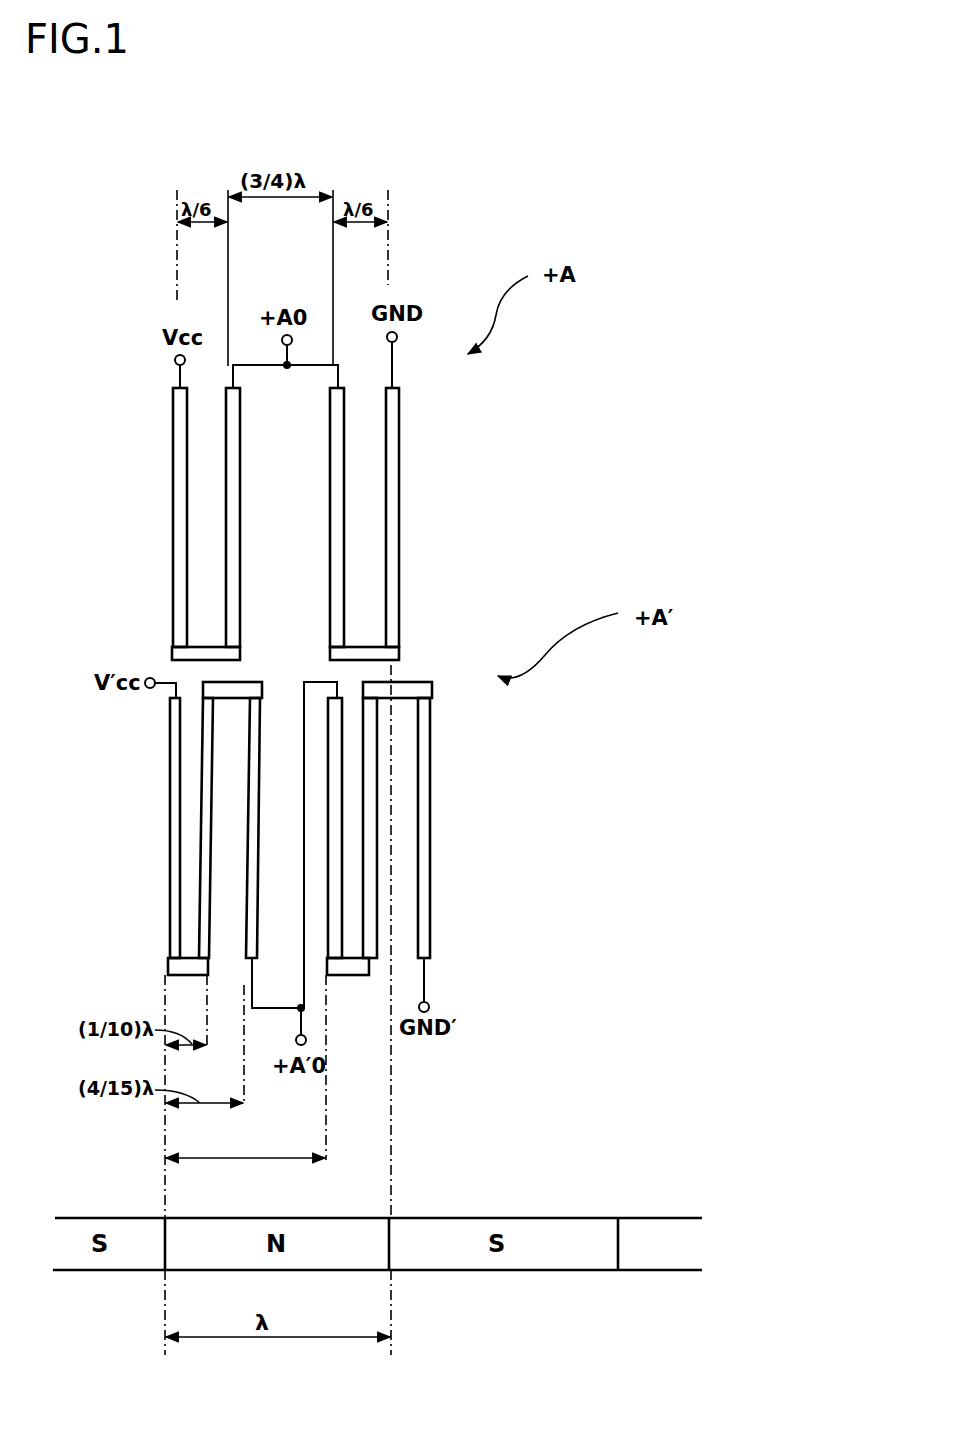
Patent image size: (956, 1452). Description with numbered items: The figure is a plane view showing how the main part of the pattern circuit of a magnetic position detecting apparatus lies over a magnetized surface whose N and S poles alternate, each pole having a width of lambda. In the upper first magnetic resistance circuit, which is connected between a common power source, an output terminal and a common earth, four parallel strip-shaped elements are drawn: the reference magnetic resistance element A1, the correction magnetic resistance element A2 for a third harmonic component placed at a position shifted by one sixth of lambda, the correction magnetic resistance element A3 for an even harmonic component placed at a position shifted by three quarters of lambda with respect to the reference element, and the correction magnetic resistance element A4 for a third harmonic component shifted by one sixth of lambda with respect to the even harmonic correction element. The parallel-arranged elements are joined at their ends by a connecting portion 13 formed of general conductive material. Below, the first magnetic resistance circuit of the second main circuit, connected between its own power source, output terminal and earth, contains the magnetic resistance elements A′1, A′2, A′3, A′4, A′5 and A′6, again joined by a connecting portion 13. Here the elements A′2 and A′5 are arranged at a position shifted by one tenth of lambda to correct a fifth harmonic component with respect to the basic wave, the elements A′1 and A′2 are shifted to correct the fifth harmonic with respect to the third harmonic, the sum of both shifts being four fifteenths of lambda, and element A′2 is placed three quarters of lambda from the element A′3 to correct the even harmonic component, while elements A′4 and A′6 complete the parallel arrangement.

The connecting portion 13 is at (176, 652).
The reference magnetic resistance element A1 is at (226, 550).
The correction magnetic resistance element for third harmonic correction component A2 is at (173, 484).
The correction magnetic resistance element for even harmonic component A3 is at (338, 551).
The correction magnetic resistance element for third harmonic component A4 is at (389, 497).
The magnetic resistance element A′1 is at (257, 850).
The magnetic resistance element A′2 is at (172, 758).
The magnetic resistance element for correcting even harmonic component A′3 is at (337, 747).
The magnetic resistance element A′4 is at (427, 840).
The magnetic resistance element A′5 is at (206, 802).
The magnetic resistance element A′6 is at (370, 793).